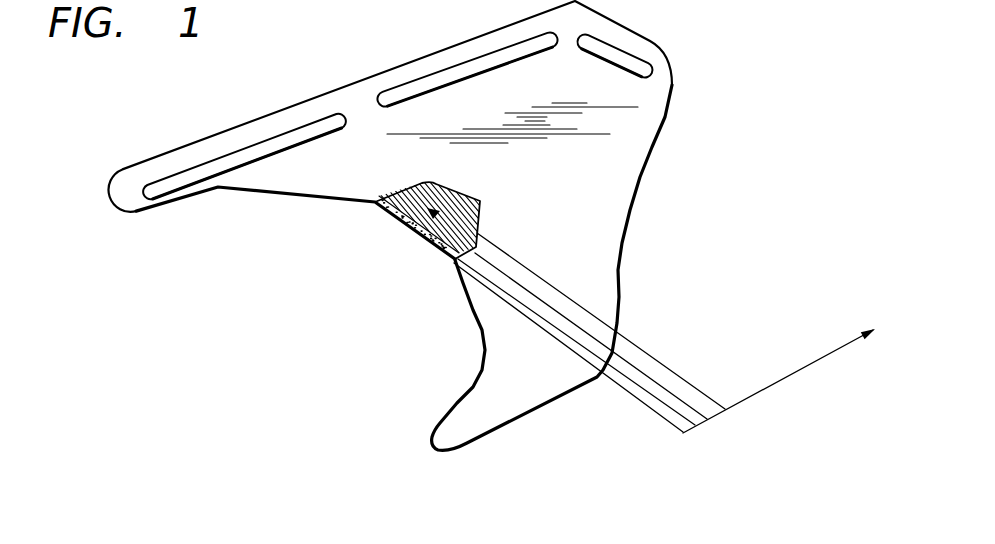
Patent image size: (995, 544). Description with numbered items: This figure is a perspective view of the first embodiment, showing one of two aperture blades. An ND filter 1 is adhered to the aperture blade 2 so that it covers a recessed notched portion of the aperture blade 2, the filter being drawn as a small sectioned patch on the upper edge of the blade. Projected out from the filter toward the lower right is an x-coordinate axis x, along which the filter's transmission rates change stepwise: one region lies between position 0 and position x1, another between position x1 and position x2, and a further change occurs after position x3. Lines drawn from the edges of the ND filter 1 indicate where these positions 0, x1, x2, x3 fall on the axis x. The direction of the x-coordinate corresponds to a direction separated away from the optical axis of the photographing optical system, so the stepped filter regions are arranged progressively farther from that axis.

The ND filter 1 is at (402, 220).
The aperture blade 2 is at (634, 165).
The x-coordinate direction x is at (788, 371).
The position 0 is at (575, 361).
The position x1 is at (698, 434).
The position x2 is at (712, 423).
The position x3 is at (731, 410).